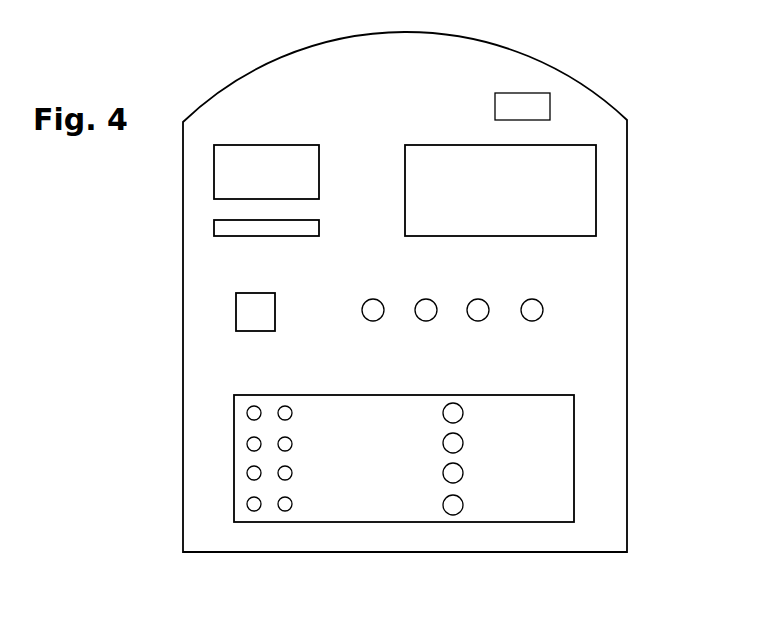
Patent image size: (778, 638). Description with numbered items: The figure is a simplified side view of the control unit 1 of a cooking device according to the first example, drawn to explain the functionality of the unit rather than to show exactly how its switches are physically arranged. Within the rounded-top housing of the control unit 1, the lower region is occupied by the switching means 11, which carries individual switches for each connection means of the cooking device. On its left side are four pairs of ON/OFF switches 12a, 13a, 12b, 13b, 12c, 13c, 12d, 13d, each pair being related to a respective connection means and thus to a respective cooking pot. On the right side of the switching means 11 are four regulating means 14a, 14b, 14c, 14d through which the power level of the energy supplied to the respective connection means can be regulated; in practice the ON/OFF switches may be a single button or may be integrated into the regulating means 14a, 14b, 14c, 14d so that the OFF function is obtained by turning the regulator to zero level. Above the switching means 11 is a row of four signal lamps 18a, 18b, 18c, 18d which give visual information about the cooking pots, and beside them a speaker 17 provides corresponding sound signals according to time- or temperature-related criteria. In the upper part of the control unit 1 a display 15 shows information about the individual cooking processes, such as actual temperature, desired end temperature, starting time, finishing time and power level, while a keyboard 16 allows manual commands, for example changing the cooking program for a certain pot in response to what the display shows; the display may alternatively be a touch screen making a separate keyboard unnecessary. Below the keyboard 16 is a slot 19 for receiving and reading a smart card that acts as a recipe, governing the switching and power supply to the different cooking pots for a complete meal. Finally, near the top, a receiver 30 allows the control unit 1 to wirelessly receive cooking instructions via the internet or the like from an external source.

The control unit 1 is at (413, 107).
The receiver 30 is at (532, 104).
The keyboard 16 is at (279, 184).
The slot 19 is at (222, 231).
The display 15 is at (508, 199).
The speaker 17 is at (246, 313).
The signal lamp 18a is at (376, 306).
The signal lamp 18b is at (430, 306).
The signal lamp 18c is at (483, 314).
The signal lamp 18d is at (536, 312).
The switching means 11 is at (392, 432).
The ON/OFF switch 12a is at (247, 413).
The ON/OFF switch 12b is at (247, 444).
The ON/OFF switch 12c is at (247, 473).
The ON/OFF switch 12d is at (247, 504).
The ON/OFF switch 13a is at (290, 415).
The ON/OFF switch 13b is at (290, 447).
The ON/OFF switch 13c is at (290, 476).
The ON/OFF switch 13d is at (283, 511).
The regulating means 14a is at (463, 413).
The regulating means 14b is at (463, 445).
The regulating means 14c is at (463, 473).
The regulating means 14d is at (463, 505).